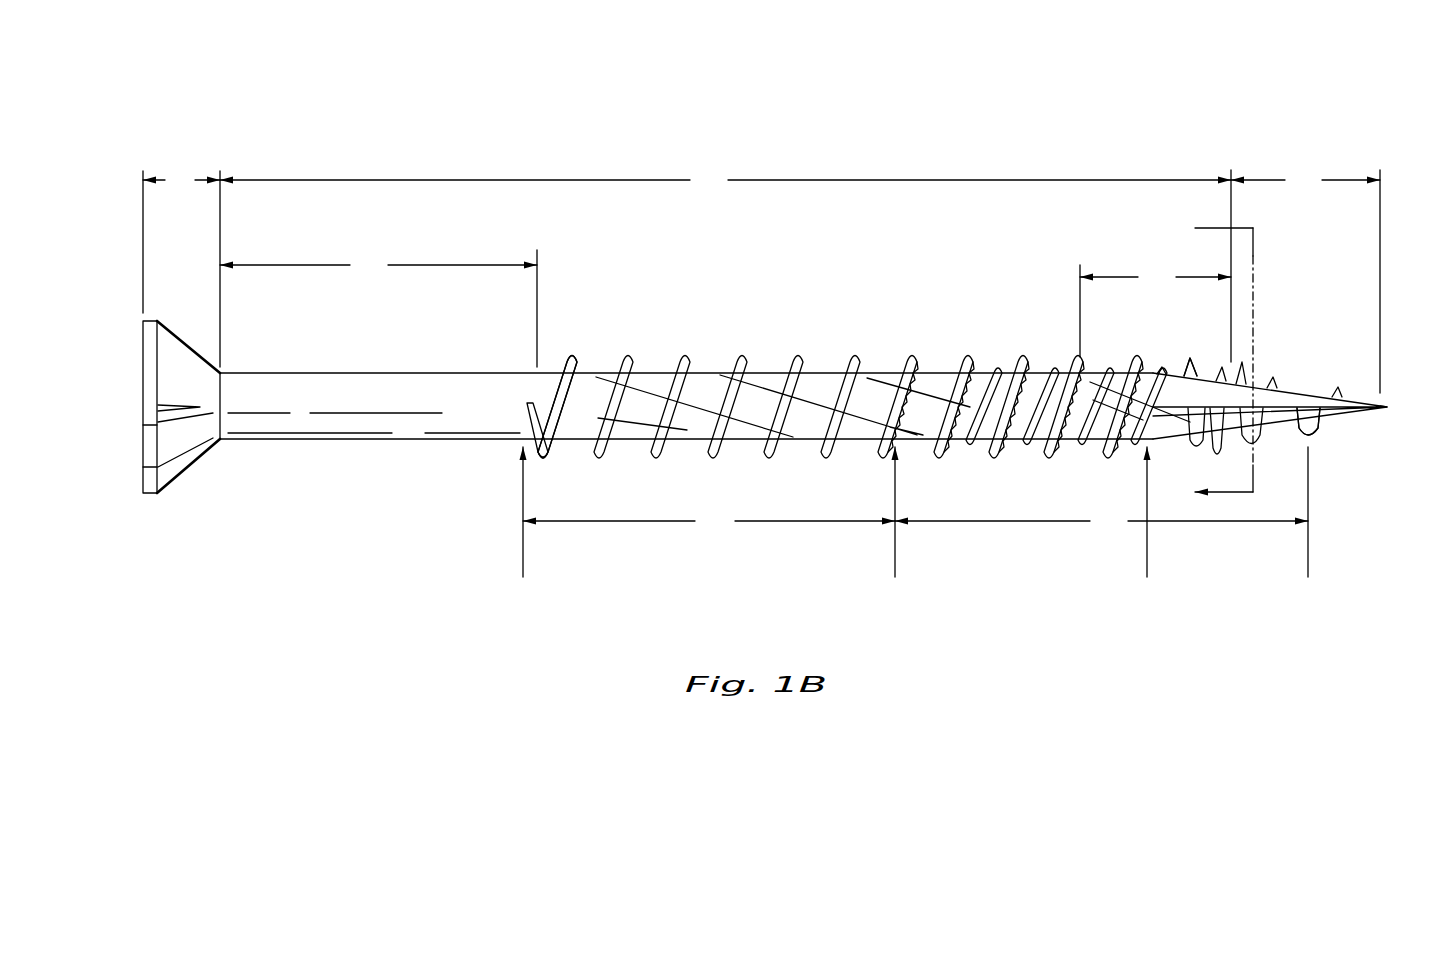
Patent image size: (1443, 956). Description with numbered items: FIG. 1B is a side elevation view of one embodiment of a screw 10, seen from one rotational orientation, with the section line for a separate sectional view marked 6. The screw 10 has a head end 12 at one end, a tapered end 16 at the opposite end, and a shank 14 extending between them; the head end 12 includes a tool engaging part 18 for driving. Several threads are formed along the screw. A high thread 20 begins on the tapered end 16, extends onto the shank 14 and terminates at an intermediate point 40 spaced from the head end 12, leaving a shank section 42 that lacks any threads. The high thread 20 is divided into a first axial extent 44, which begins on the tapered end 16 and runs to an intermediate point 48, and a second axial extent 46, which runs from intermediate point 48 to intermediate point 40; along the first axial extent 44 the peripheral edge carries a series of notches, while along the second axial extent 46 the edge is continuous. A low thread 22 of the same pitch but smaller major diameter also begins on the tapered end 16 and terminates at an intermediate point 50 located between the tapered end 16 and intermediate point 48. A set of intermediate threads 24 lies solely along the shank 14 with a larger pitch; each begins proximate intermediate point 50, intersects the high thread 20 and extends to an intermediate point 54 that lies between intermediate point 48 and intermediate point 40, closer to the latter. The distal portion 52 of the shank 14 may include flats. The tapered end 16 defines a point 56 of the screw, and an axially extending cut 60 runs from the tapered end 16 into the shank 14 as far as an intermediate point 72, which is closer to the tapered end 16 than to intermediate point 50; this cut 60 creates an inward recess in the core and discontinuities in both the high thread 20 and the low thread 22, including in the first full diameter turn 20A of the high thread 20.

The screw 10 is at (768, 301).
The head end 12 is at (181, 267).
The shank 14 is at (725, 265).
The tapered end 16 is at (1305, 280).
The tool engaging part 18 is at (137, 447).
The high thread 20 is at (1240, 375).
The first full diameter turn 20A is at (1187, 366).
The low thread 22 is at (1313, 427).
The intermediate threads 24 is at (673, 363).
The intermediate point 40 is at (523, 528).
The shank section 42 is at (378, 308).
The first axial extent 44 is at (1101, 512).
The second axial extent 46 is at (709, 522).
The intermediate point 48 is at (896, 528).
The intermediate point 50 is at (953, 368).
The distal portion 52 is at (1155, 311).
The intermediate point 54 is at (598, 365).
The point 56 is at (1387, 407).
The axially extending cut 60 is at (1273, 398).
The intermediate point 72 is at (1148, 528).
The section line 6- 6 is at (1213, 362).